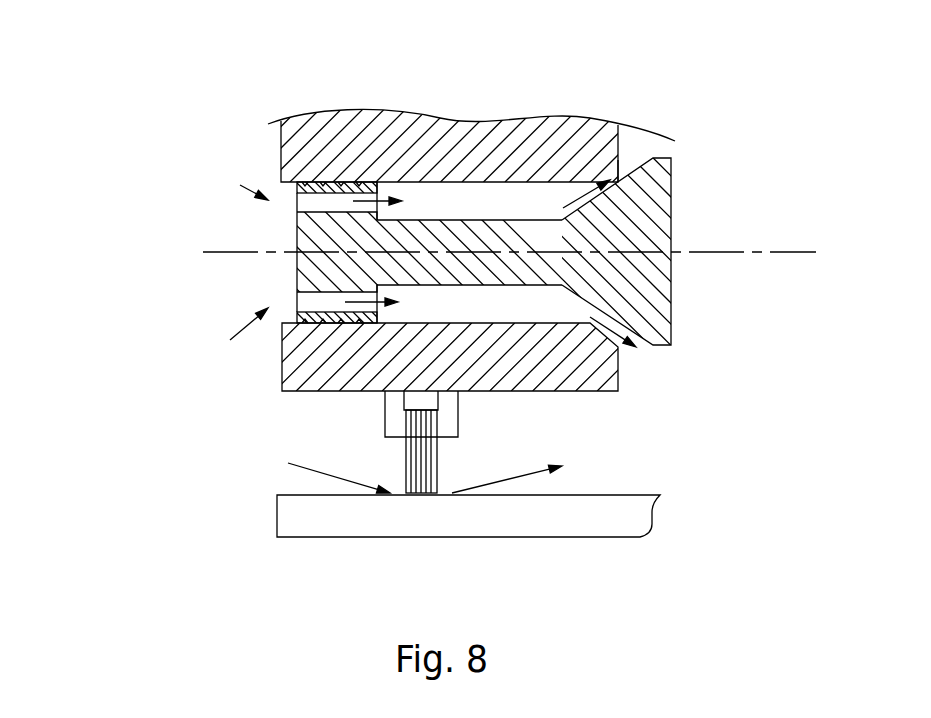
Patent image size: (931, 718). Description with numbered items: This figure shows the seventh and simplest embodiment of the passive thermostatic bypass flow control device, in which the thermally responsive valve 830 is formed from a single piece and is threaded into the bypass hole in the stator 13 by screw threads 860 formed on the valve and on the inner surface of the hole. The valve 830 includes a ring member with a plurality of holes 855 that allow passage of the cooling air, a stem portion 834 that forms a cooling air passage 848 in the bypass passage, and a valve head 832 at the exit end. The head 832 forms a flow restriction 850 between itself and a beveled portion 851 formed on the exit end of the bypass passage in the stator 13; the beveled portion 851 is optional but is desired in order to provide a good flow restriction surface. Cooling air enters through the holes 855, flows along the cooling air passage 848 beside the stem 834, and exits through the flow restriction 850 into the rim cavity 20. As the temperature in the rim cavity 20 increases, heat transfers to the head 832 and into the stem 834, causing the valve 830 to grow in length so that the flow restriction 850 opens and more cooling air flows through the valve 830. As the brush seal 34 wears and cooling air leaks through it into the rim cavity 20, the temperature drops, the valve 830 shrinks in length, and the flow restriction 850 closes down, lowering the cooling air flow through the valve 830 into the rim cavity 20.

The wall 13 is at (348, 125).
The rim cavity 20 is at (744, 229).
The brush seal 34 is at (402, 457).
The thermally responsive valve 830 is at (165, 134).
The valve head 832 is at (650, 207).
The stem portion 834 is at (418, 237).
The cooling air passage 848 is at (462, 200).
The flow restriction 850 is at (615, 177).
The beveled portion 851 is at (600, 175).
The holes 855 is at (305, 305).
The screw threads 860 is at (320, 181).